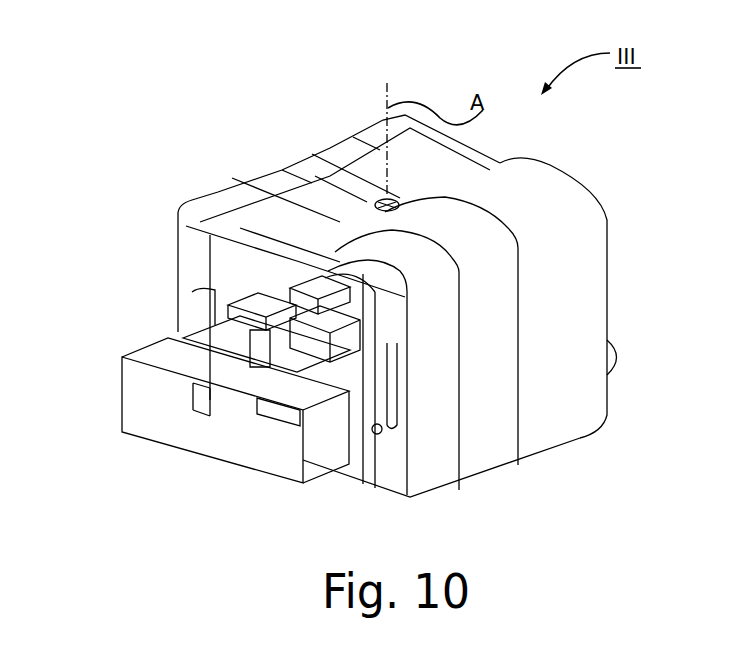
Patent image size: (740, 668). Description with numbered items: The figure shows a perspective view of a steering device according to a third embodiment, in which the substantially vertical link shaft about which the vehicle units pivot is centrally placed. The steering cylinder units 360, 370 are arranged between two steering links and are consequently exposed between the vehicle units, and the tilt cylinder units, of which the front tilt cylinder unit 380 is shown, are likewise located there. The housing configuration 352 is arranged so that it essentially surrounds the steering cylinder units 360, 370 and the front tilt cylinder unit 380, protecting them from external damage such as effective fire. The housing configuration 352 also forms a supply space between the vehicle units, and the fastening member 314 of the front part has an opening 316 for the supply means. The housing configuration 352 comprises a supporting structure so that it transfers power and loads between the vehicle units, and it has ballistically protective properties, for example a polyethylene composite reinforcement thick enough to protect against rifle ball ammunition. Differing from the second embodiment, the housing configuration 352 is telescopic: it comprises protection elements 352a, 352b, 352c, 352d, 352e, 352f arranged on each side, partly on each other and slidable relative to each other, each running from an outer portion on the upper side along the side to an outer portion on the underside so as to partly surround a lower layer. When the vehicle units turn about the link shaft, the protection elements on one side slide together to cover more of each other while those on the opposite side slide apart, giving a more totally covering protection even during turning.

The fastening member 314 is at (177, 343).
The opening 316 is at (158, 400).
The housing configuration 352 is at (407, 450).
The protection element 352a is at (427, 470).
The protection element 352b is at (477, 447).
The protection element 352c is at (557, 418).
The protection element 352d is at (218, 192).
The protection element 352e is at (280, 162).
The protection element 352f is at (353, 130).
The steering cylinder unit 360 is at (203, 325).
The steering cylinder unit 370 is at (355, 365).
The front tilt cylinder unit 380 is at (293, 290).